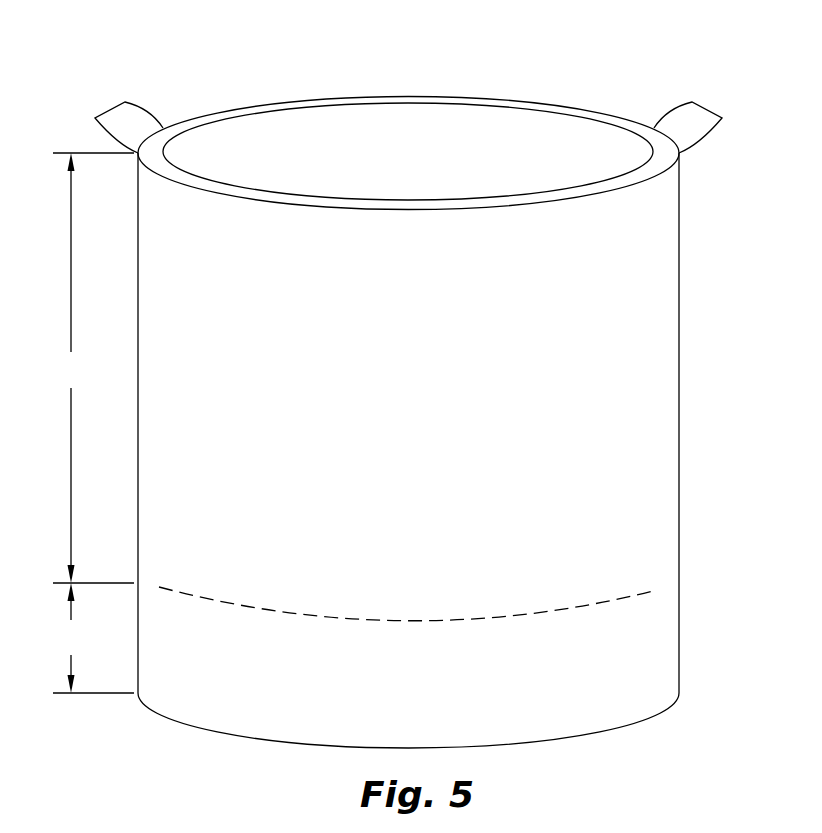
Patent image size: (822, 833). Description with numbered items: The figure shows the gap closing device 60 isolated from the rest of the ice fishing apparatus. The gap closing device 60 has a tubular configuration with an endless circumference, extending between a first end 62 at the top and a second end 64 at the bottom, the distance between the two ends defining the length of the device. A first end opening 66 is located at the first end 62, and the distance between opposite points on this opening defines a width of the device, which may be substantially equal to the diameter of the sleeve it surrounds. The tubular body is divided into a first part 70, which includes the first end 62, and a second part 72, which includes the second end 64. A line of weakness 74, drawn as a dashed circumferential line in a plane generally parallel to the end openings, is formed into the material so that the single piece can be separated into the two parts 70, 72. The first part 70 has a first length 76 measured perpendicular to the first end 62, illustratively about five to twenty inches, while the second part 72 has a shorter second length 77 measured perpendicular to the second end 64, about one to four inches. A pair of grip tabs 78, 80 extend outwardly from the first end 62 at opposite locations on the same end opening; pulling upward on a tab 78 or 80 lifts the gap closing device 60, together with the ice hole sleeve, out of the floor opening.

The gap closing device 60 is at (516, 69).
The first end 62 is at (699, 193).
The second end 64 is at (695, 712).
The first end opening 66 is at (556, 130).
The first part 70 is at (713, 423).
The second part 72 is at (628, 637).
The line of weakness 74 is at (630, 597).
The first length 76 is at (93, 368).
The second length 77 is at (93, 638).
The grip tab 78 is at (120, 117).
The grip tab 80 is at (688, 117).